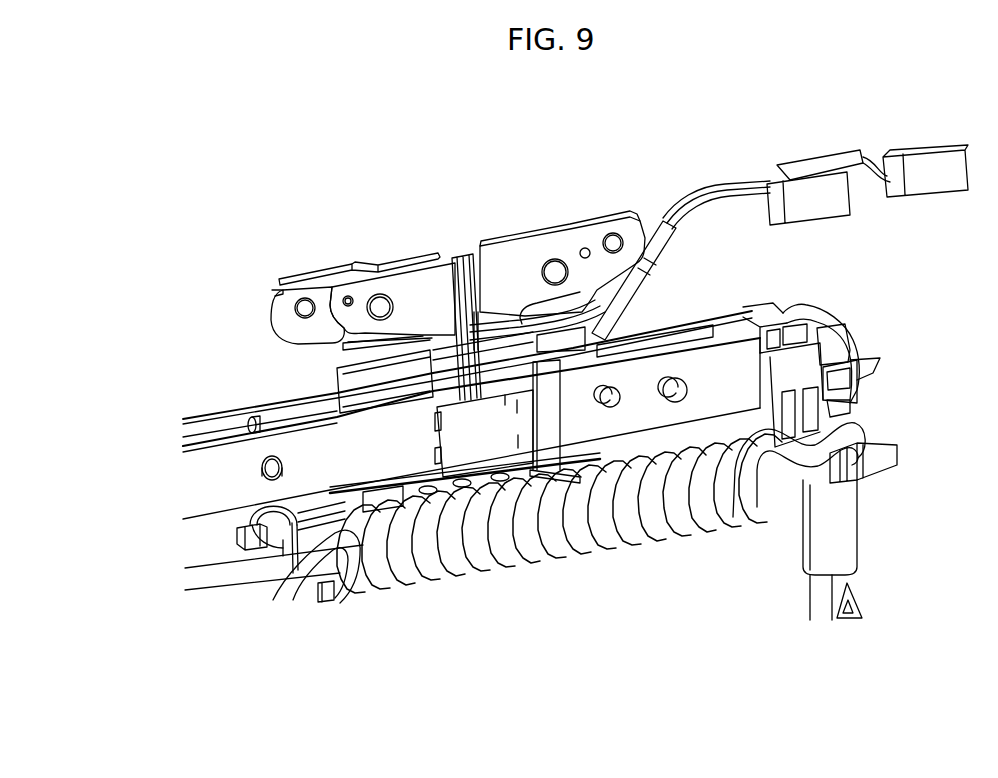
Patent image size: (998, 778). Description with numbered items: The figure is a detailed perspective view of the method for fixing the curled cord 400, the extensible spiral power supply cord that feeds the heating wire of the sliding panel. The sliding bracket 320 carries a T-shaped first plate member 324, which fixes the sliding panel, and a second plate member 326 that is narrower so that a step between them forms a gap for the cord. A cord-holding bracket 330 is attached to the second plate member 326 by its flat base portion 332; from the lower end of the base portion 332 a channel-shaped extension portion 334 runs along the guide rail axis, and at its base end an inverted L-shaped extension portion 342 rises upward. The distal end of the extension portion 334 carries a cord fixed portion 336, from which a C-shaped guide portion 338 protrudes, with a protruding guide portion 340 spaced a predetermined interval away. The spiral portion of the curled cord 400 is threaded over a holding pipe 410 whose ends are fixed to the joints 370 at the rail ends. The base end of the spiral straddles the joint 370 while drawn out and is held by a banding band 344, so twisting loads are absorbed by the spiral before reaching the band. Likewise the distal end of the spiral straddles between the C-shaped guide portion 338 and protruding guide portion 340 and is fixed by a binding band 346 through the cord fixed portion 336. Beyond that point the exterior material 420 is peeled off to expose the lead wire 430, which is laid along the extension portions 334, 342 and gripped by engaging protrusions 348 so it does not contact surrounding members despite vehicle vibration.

The sliding bracket 320 is at (380, 285).
The first plate member 324 is at (307, 267).
The second plate member 326 is at (559, 257).
The cord-holding bracket 330 is at (375, 389).
The base portion 332 is at (471, 476).
The extension portion 334 is at (399, 566).
The cord fixed portion 336 is at (203, 513).
The C-shaped guide portion 338 is at (338, 625).
The protruding guide portion 340 is at (335, 589).
The extension portion 342 is at (719, 242).
The banding band 344 is at (880, 531).
The binding band 346 is at (187, 537).
The engaging protrusions 348 is at (529, 500).
The joint 370 is at (833, 350).
The curled cord 400 is at (651, 532).
The holding pipe 410 is at (274, 607).
The exterior material 420 is at (226, 509).
The lead wire 430 is at (279, 597).